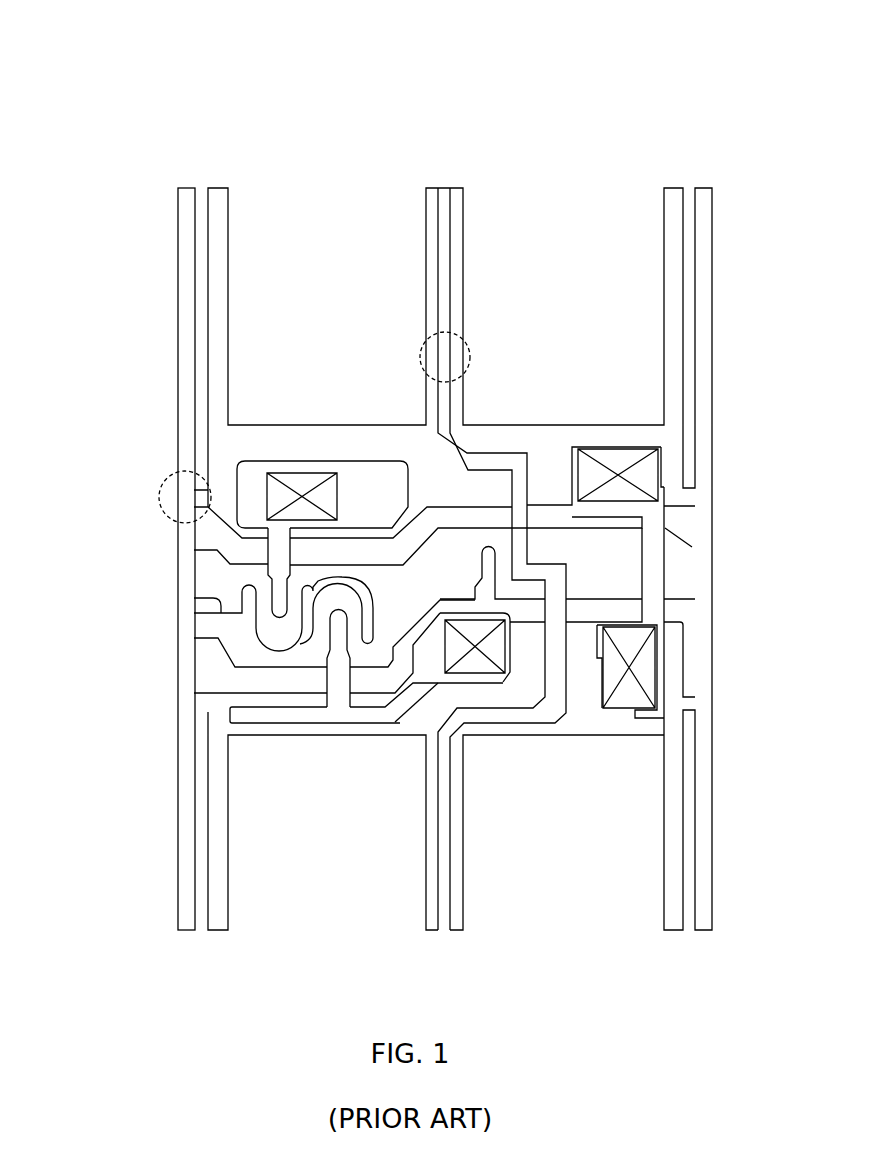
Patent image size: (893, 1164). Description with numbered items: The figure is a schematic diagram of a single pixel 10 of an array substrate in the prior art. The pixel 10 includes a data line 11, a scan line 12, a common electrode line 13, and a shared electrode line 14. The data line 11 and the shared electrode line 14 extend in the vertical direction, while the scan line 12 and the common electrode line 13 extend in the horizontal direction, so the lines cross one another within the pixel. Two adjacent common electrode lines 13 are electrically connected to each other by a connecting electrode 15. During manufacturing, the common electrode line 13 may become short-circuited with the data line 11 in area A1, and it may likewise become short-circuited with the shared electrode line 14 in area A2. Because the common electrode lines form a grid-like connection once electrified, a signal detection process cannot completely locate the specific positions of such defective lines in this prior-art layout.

The pixel 10 is at (176, 64).
The data line 11 is at (178, 228).
The scan line 12 is at (208, 583).
The common electrode line 13 is at (222, 457).
The shared electrode line 14 is at (497, 460).
The connecting electrode 15 is at (653, 578).
The area A1 is at (163, 485).
The area A2 is at (425, 350).